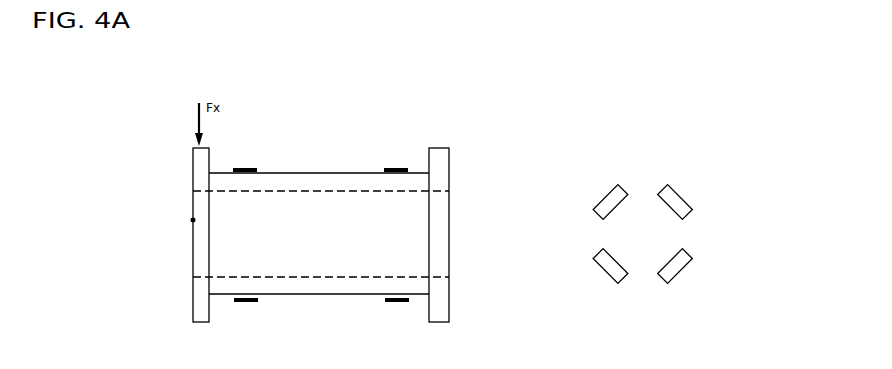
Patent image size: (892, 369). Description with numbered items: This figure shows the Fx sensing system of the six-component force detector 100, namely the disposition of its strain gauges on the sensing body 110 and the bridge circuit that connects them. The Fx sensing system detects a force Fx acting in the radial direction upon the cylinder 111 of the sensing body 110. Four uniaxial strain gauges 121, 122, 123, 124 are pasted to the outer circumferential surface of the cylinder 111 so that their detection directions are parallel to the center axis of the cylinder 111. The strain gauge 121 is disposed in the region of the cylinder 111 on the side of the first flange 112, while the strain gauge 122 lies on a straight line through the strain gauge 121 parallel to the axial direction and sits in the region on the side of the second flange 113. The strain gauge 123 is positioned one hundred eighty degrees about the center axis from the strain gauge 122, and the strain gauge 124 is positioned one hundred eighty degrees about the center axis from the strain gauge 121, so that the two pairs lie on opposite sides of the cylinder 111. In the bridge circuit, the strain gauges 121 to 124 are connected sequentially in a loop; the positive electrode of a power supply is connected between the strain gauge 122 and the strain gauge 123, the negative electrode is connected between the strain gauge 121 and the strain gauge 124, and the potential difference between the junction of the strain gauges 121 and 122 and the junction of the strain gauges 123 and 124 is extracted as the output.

The six-component force detector 100 is at (170, 144).
The sensing body 110 is at (175, 166).
The cylinder 111 is at (316, 173).
The first flange 112 is at (193, 220).
The second flange 113 is at (449, 230).
The strain gauge 121 is at (245, 168).
The strain gauge 122 is at (397, 168).
The strain gauge 123 is at (397, 302).
The strain gauge 124 is at (246, 302).